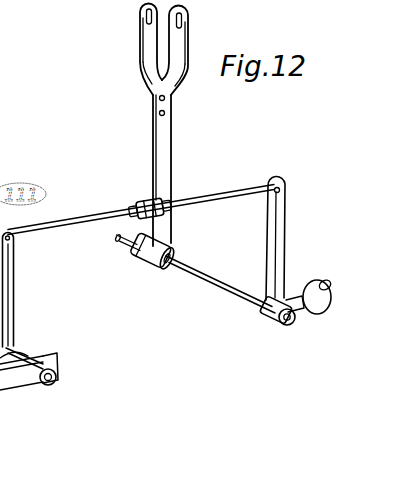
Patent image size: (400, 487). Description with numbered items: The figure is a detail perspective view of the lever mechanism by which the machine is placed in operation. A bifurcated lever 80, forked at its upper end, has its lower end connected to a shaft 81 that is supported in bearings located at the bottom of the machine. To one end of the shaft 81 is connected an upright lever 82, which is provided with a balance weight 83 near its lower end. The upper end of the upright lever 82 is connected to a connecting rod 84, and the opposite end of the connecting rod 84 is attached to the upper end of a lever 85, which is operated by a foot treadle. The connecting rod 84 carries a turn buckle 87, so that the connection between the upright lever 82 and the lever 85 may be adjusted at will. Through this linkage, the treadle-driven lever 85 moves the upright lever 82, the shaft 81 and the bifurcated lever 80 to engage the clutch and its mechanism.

The bifurcated lever 80 is at (165, 152).
The shaft 81 is at (217, 265).
The upright lever 82 is at (285, 232).
The balance weight 83 is at (313, 284).
The connecting rod 84 is at (207, 200).
The lever 85 is at (13, 275).
The turn buckle 87 is at (140, 202).